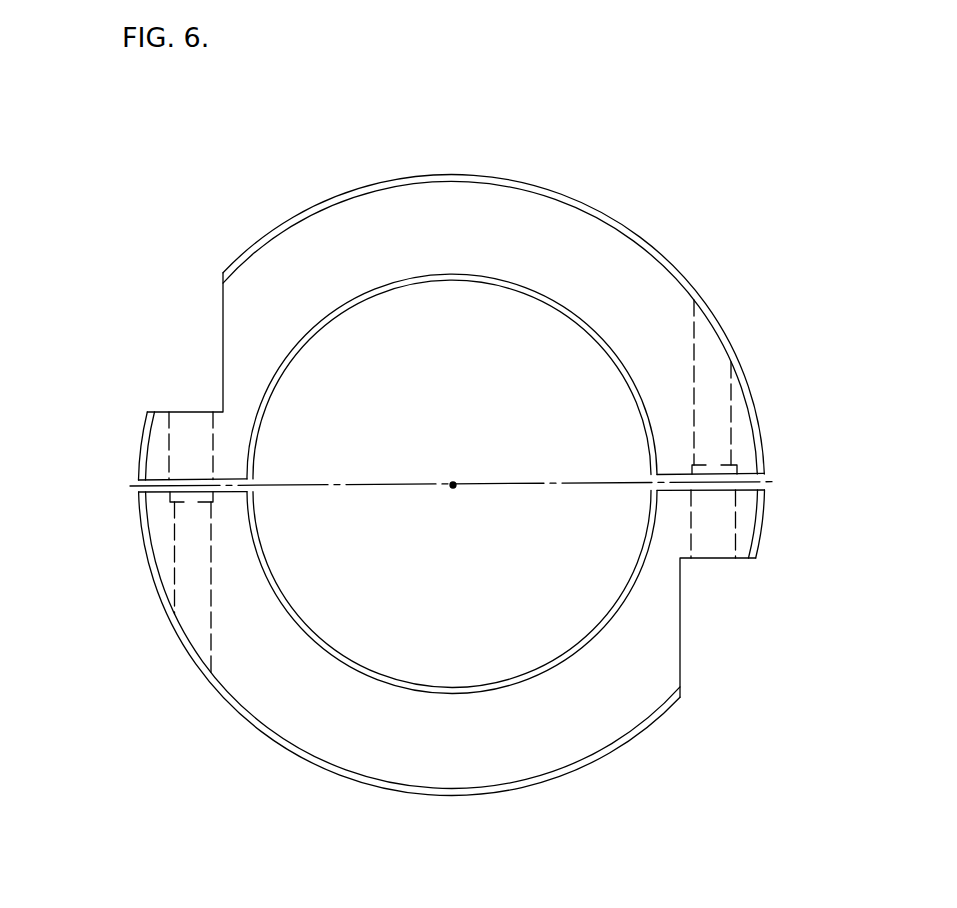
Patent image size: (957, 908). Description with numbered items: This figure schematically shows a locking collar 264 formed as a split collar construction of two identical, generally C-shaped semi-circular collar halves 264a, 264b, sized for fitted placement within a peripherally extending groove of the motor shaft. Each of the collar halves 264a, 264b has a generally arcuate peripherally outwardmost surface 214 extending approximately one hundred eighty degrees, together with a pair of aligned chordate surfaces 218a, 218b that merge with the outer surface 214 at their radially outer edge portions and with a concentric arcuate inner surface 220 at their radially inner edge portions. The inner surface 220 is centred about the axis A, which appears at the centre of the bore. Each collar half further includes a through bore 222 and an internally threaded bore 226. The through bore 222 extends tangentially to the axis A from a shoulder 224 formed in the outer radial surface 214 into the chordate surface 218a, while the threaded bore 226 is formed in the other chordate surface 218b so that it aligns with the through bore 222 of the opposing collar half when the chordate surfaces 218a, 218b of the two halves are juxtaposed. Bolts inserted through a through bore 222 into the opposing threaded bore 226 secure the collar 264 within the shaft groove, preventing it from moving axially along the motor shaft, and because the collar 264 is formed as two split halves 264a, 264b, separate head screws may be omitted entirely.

The locking collar 264 is at (352, 178).
The collar half 264a is at (470, 252).
The collar half 264b is at (470, 755).
The peripherally outwardmost surface 214 is at (566, 195).
The arcuate inner surface 220 is at (520, 300).
The chordate surface 218a is at (249, 486).
The chordate surface 218b is at (137, 493).
The through bore 222 is at (170, 448).
The shoulder 224 is at (157, 410).
The internally threaded bore 226 is at (710, 295).
The axis A is at (451, 467).